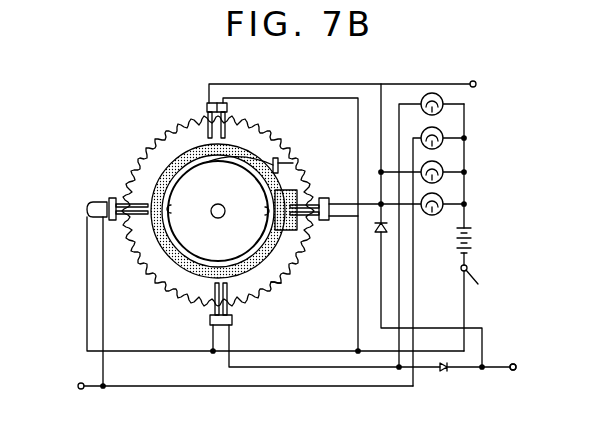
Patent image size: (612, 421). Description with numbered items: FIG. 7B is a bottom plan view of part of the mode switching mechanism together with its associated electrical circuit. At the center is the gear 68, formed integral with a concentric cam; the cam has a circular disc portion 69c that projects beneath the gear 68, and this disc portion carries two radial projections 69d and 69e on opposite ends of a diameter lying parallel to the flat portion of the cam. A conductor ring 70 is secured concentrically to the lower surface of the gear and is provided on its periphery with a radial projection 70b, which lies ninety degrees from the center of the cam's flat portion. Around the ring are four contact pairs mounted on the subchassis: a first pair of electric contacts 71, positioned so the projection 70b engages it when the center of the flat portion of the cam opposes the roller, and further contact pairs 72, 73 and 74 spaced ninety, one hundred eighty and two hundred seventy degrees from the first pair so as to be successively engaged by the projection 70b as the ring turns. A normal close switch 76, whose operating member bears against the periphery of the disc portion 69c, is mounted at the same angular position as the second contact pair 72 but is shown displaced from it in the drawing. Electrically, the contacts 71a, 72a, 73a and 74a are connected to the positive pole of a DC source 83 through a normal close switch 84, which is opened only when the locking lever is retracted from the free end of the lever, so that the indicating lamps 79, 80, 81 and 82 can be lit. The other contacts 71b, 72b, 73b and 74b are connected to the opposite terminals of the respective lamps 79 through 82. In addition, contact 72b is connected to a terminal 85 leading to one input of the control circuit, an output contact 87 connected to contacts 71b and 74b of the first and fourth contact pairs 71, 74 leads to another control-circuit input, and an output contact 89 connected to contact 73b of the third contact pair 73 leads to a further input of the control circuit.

The gear 68 is at (256, 128).
The circular disc portion 69c is at (187, 183).
The radial projection 69d is at (265, 214).
The radial projection 69e is at (173, 203).
The conductor ring 70 is at (175, 262).
The radial projection 70b is at (284, 283).
The pair of electric contacts 71 is at (322, 198).
The contact 71a is at (324, 221).
The contact 71b is at (331, 203).
The contact pair 72 is at (215, 103).
The contact 72a is at (224, 103).
The contact 72b is at (207, 103).
The contact pair 73 is at (117, 220).
The contact 73a is at (104, 199).
The contact 73b is at (87, 210).
The contact pair 74 is at (232, 320).
The contact 74a is at (213, 327).
The contact 74b is at (230, 327).
The normal close switch 76 is at (278, 152).
The indicating lamp 79 is at (443, 198).
The indicating lamp 80 is at (443, 166).
The indicating lamp 81 is at (443, 134).
The indicating lamp 82 is at (433, 93).
The DC source 83 is at (472, 240).
The normal close switch 84 is at (478, 284).
The terminal 85 is at (476, 84).
The output contact 87 is at (516, 367).
The output contact 89 is at (78, 386).